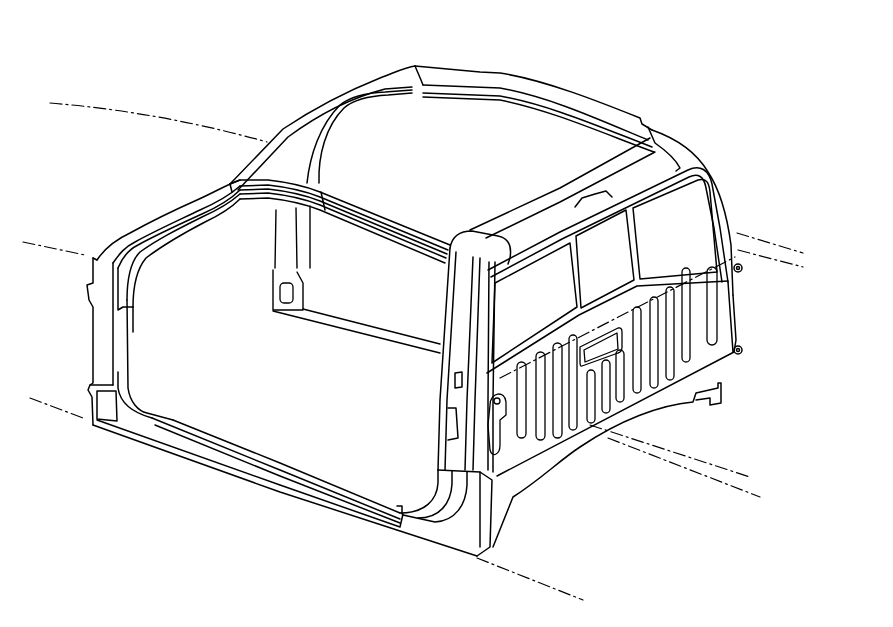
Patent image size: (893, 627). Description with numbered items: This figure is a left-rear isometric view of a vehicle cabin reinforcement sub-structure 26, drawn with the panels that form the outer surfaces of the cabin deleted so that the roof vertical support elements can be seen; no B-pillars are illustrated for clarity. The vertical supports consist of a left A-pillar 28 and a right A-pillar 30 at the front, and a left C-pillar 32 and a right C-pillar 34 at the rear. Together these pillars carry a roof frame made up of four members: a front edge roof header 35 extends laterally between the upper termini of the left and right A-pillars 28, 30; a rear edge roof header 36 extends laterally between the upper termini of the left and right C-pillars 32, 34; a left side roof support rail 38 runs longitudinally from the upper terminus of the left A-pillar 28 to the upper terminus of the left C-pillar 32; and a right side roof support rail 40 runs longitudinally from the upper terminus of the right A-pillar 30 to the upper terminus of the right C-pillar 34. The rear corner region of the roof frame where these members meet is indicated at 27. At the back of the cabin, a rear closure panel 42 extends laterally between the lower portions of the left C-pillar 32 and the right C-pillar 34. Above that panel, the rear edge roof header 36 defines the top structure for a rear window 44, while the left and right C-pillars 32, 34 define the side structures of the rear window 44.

The vehicle cabin reinforcement sub-structure 26 is at (196, 84).
The roof structure 27 is at (643, 121).
The left A-pillar 28 is at (163, 218).
The right A-pillar 30 is at (350, 107).
The left C-pillar 32 is at (458, 322).
The right C-pillar 34 is at (713, 178).
The front edge roof header 35 is at (307, 116).
The rear edge roof header 36 is at (612, 183).
The left side roof support rail 38 is at (433, 238).
The right side roof support rail 40 is at (543, 100).
The rear closure panel 42 is at (725, 343).
The rear window 44 is at (712, 222).